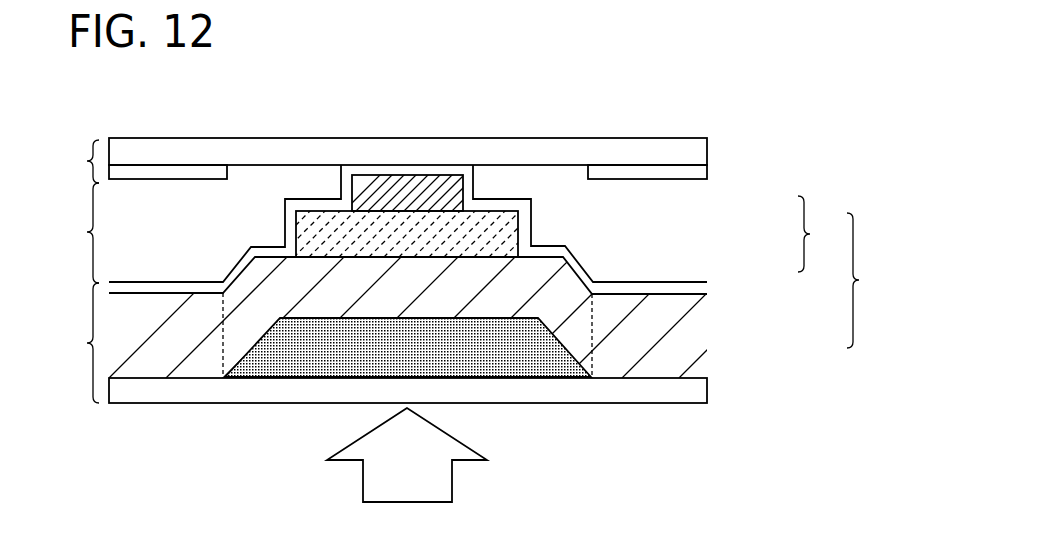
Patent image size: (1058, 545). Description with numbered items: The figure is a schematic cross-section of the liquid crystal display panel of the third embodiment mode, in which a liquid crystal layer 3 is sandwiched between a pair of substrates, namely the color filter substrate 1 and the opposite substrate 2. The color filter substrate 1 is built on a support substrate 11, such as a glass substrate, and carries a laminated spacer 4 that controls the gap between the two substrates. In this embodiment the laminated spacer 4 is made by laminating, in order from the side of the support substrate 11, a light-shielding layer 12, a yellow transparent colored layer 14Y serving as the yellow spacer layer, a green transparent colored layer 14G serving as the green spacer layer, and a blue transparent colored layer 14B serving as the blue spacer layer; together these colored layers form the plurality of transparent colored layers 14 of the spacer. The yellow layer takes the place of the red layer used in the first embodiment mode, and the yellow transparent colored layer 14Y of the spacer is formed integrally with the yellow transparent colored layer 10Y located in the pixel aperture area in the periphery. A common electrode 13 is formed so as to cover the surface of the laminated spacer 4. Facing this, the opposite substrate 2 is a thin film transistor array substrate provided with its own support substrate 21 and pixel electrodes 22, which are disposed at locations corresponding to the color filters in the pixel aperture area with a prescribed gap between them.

The color filter substrate 1 is at (84, 343).
The opposite substrate 2 is at (83, 161).
The liquid crystal layer 3 is at (83, 233).
The laminated spacer 4 is at (860, 280).
The yellow transparent colored layer 10Y is at (685, 350).
The support substrate 11 is at (700, 393).
The light-shielding layer 12 is at (538, 367).
The common electrode 13 is at (317, 199).
The transparent colored layers 14 is at (819, 234).
The blue transparent colored layer 14B is at (450, 188).
The green transparent colored layer 14G is at (513, 230).
The yellow transparent colored layer 14Y is at (565, 282).
The support substrate 21 is at (697, 152).
The pixel electrodes 22 is at (695, 172).